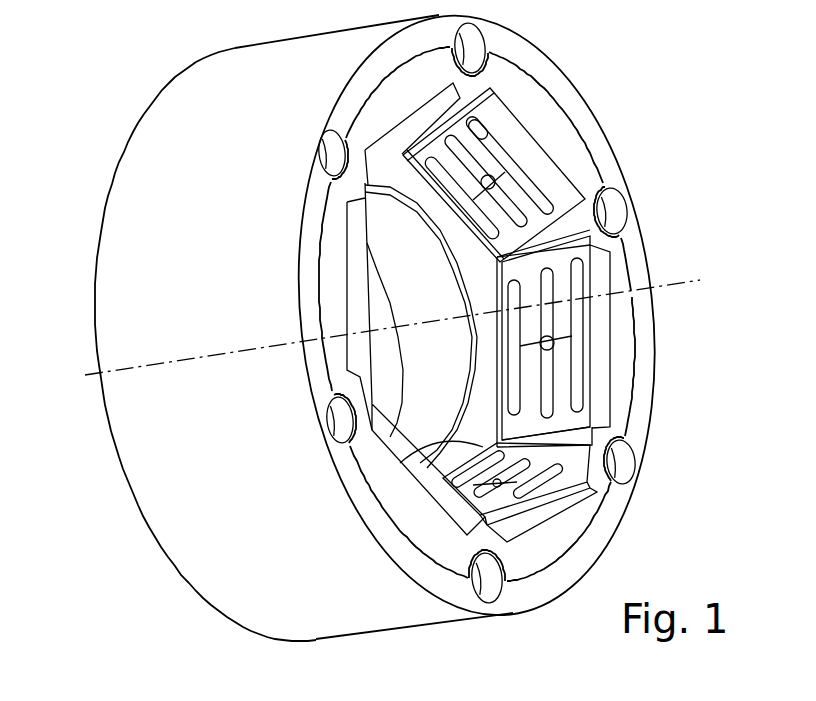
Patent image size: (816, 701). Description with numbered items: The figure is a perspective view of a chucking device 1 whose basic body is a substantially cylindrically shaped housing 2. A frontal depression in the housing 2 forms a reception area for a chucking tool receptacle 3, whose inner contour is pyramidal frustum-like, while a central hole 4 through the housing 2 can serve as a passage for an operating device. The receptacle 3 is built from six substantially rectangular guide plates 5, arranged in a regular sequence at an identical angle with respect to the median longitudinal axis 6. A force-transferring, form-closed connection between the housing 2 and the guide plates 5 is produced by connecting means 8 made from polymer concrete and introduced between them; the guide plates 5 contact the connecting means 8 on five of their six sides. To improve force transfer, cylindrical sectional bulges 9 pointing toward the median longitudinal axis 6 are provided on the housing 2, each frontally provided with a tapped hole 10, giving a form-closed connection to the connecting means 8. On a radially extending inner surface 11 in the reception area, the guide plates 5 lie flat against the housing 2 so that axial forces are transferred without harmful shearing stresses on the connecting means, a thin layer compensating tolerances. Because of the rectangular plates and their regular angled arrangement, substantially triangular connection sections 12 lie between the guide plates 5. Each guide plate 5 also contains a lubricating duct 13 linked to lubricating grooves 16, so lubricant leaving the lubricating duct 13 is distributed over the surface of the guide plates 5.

The chucking device 1 is at (655, 136).
The housing 2 is at (173, 285).
The chucking tool receptacle 3 is at (500, 272).
The central hole 4 is at (387, 362).
The guide plates 5 is at (473, 147).
The median longitudinal axis 6 is at (670, 290).
The connecting means 8 is at (567, 532).
The cylindrical sectional bulges 9 is at (613, 487).
The tapped hole 10 is at (610, 212).
The inner surface 11 is at (413, 453).
The connection sections 12 is at (580, 243).
The lubricating duct 13 is at (488, 182).
The lubricating grooves 16 is at (580, 397).